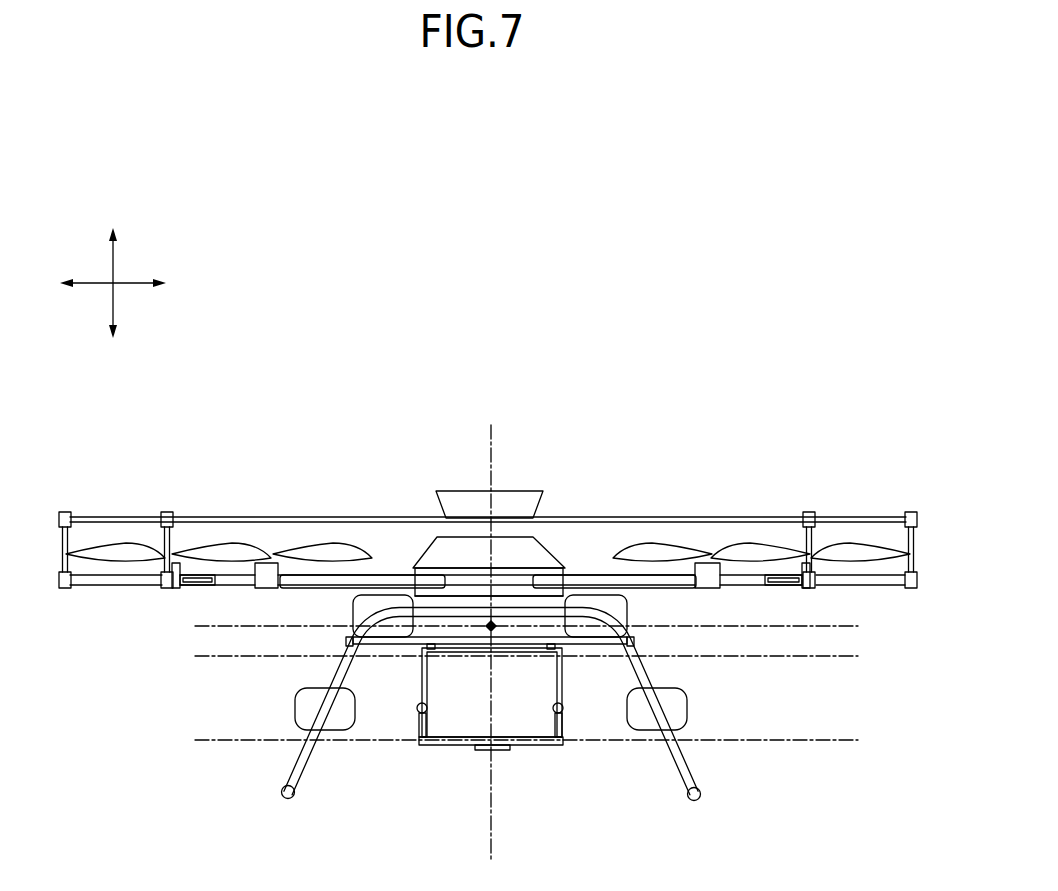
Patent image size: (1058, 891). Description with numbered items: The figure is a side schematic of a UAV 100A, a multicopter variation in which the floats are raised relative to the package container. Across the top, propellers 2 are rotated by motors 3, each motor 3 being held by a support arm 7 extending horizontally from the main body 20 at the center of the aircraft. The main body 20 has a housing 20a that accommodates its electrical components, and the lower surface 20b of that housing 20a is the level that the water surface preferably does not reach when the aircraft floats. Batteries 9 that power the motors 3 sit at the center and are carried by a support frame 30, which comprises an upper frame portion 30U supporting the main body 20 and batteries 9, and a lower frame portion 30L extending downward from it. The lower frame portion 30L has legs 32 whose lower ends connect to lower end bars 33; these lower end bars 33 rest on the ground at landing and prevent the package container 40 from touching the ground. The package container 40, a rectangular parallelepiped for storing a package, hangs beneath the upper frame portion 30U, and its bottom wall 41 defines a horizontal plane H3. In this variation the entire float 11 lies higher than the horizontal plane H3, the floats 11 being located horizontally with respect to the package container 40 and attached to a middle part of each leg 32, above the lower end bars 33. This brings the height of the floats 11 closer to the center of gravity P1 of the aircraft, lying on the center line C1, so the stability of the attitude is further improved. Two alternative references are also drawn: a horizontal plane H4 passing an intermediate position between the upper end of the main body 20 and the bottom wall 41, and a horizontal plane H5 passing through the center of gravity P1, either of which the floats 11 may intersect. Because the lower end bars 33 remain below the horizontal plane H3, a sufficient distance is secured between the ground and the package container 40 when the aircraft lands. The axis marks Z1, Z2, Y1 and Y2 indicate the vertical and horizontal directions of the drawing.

The UAV 100A is at (686, 398).
The propeller 2 is at (137, 548).
The motor 3 is at (268, 575).
The support arm 7 is at (588, 575).
The battery 9 is at (353, 609).
The float 11 is at (303, 708).
The main body 20 is at (421, 517).
The housing 20a is at (422, 536).
The lower surface 20b is at (500, 610).
The support frame 30 is at (522, 730).
The upper frame portion 30U is at (580, 660).
The lower frame portion 30L is at (773, 760).
The leg 32 is at (299, 758).
The lower end bar 33 is at (281, 793).
The package container 40 is at (452, 756).
The bottom wall 41 is at (522, 748).
The center line C1 is at (494, 625).
The center of gravity P1 is at (494, 640).
The horizontal plane H3 is at (545, 740).
The horizontal plane H4 is at (545, 658).
The horizontal plane H5 is at (545, 628).
The Z1 direction Z1 is at (113, 213).
The Z2 direction Z2 is at (113, 355).
The Y1 direction Y1 is at (43, 284).
The Y2 direction Y2 is at (184, 284).